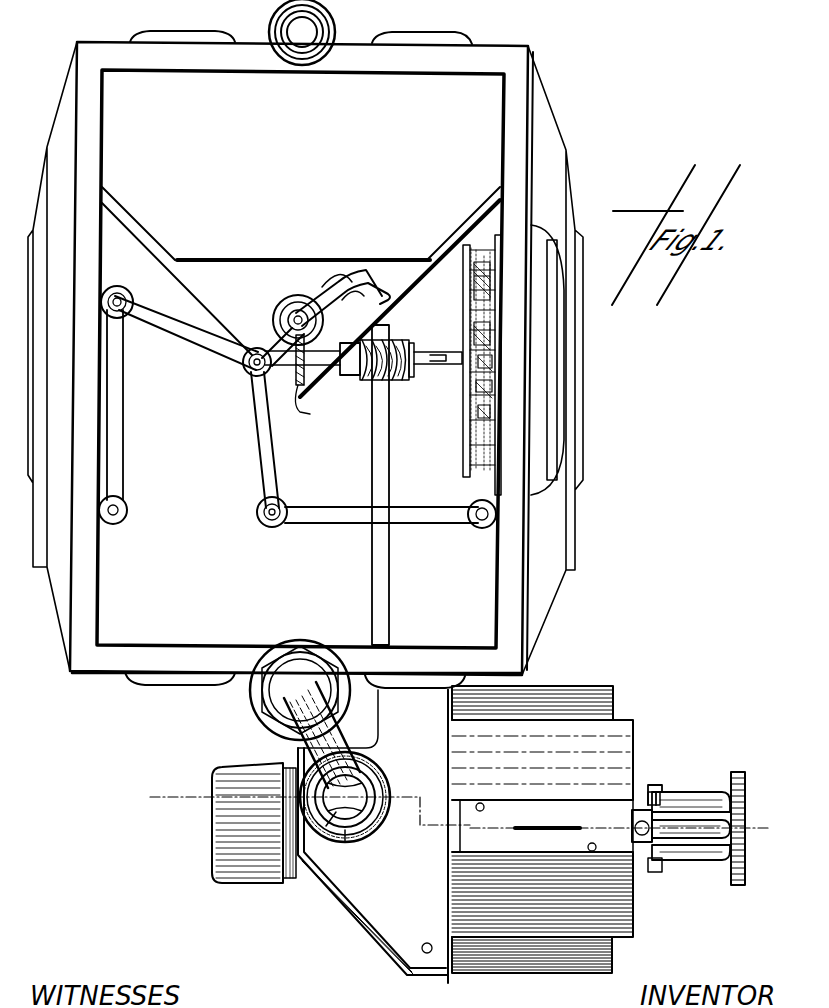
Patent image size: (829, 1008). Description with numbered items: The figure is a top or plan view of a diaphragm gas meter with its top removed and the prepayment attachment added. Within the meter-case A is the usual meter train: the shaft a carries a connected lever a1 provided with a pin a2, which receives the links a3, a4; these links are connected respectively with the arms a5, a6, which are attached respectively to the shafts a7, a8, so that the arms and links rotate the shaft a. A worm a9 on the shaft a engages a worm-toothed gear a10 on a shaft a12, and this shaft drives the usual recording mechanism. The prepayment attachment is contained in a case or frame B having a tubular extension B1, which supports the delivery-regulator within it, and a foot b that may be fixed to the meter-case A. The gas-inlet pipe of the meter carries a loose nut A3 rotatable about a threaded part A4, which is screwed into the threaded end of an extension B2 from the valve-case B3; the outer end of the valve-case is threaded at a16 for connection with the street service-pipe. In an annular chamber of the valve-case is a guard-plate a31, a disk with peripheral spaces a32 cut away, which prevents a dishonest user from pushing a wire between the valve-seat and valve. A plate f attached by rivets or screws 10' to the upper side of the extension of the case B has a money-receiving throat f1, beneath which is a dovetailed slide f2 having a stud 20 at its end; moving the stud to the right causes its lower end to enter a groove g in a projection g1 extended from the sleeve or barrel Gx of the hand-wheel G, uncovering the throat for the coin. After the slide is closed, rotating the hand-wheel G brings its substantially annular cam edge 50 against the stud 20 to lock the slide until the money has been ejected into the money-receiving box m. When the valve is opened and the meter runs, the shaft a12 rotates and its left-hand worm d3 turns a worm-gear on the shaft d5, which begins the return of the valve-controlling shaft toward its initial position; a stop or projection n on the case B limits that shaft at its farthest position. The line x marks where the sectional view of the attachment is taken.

The meter-case A is at (548, 128).
The loose nut A3 is at (258, 698).
The threaded part A4 is at (468, 405).
The shaft a is at (299, 316).
The lever a1 is at (272, 340).
The pin a2 is at (250, 369).
The link a3 is at (198, 338).
The link a4 is at (262, 458).
The arm a5 is at (125, 446).
The arm a6 is at (330, 507).
The shaft a7 is at (128, 509).
The shaft a8 is at (475, 525).
The worm a9 is at (294, 312).
The worm-toothed gear a10 is at (305, 410).
The shaft a12 is at (326, 356).
The thread a16 is at (345, 830).
The guard-plate a31 is at (358, 788).
The spaces a32 is at (326, 826).
The foot b is at (430, 680).
The case or frame B is at (364, 912).
The tubular extension B1 is at (618, 738).
The extension B2 is at (304, 734).
The valve-case B3 is at (372, 790).
The left-hand worm d3 is at (396, 344).
The shaft d5 is at (389, 462).
The plate f is at (514, 808).
The money-receiving throat f1 is at (553, 822).
The slide f2 is at (648, 790).
The groove g is at (706, 814).
The projection g1 is at (668, 812).
The hand-wheel G is at (745, 792).
The sleeve or barrel Gx is at (700, 858).
The money-receiving box m is at (584, 712).
The stop or projection n is at (215, 806).
The section line x is at (310, 804).
The rivets or screws 10' is at (531, 829).
The stud 20 is at (630, 830).
The annular cam edge 50 is at (670, 790).